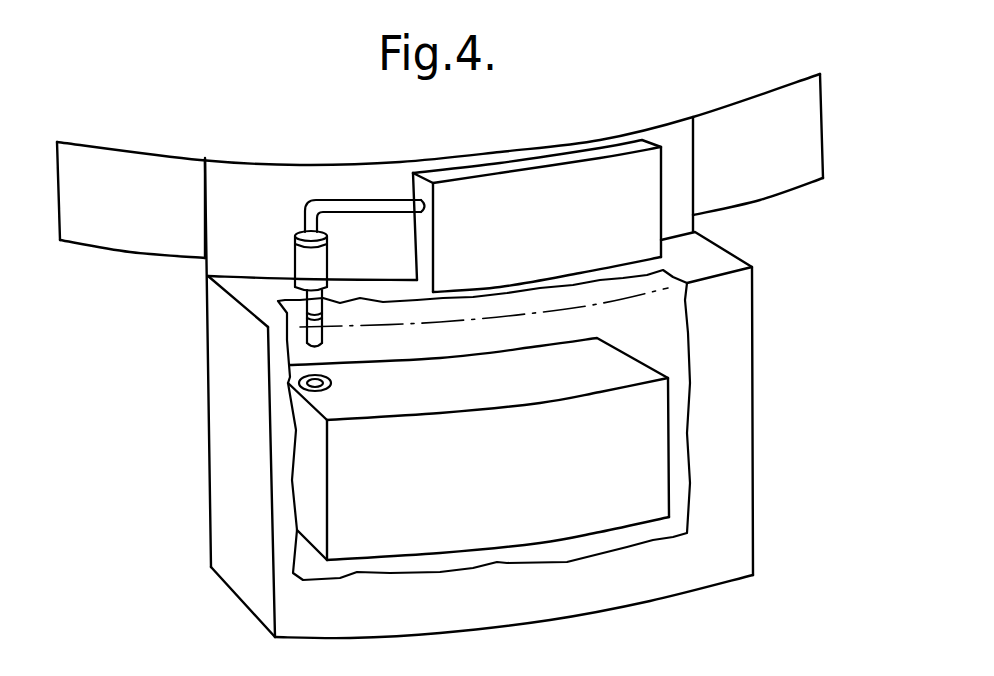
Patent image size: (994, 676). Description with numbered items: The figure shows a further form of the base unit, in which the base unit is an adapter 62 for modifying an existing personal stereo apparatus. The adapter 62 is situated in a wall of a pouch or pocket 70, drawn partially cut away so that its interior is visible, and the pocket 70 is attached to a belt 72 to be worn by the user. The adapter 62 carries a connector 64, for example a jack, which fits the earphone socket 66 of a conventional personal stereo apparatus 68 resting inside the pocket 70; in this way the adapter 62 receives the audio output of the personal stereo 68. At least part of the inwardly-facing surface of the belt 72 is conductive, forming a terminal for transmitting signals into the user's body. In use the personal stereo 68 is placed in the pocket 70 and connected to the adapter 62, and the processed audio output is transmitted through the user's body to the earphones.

The adapter 62 is at (515, 187).
The connector 64 is at (300, 252).
The earphone socket 66 is at (300, 383).
The personal stereo apparatus 68 is at (667, 445).
The pouch or pocket 70 is at (738, 340).
The belt 72 is at (813, 133).